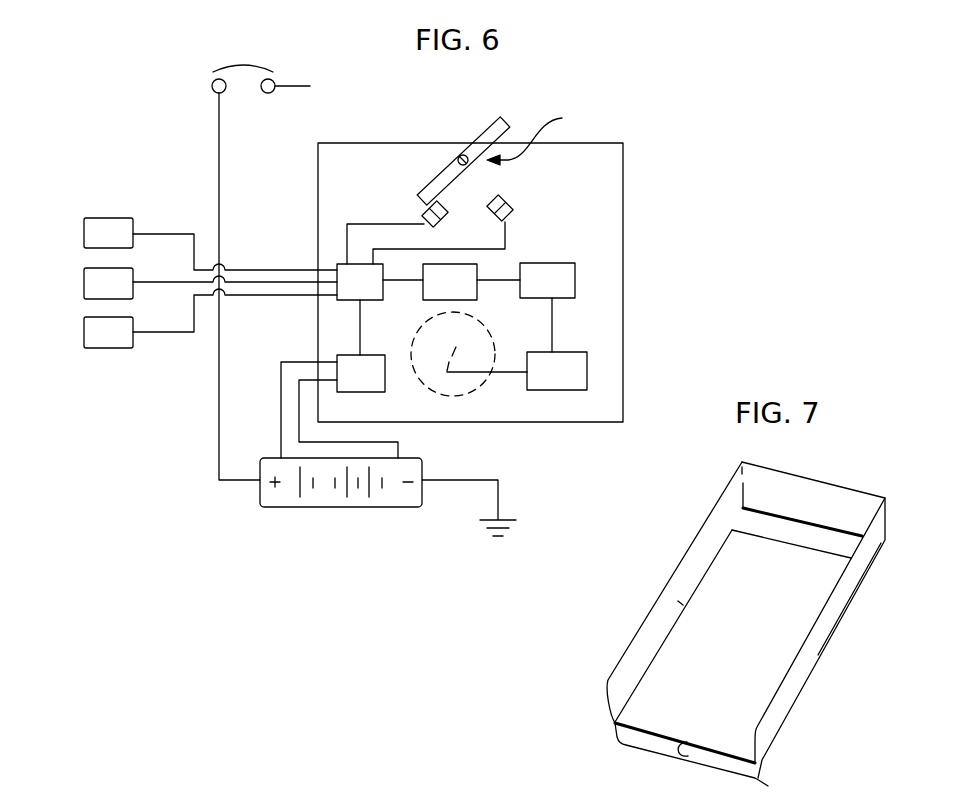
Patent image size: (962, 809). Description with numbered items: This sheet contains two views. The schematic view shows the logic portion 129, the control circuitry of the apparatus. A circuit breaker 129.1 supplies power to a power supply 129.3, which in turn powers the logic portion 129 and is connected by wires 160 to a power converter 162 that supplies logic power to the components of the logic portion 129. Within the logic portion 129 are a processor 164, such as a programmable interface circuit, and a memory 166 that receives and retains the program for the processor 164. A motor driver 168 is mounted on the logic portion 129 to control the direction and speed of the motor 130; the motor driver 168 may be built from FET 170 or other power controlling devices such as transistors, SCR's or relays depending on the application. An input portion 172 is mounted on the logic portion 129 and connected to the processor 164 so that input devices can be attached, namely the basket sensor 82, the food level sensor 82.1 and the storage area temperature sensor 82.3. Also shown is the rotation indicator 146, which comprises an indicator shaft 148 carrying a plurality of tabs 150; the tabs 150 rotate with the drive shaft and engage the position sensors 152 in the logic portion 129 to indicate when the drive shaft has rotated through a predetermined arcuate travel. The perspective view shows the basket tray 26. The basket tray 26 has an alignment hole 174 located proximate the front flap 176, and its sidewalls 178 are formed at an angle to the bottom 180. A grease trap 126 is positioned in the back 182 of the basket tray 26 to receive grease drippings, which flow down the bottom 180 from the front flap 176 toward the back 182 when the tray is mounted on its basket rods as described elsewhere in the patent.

In FIG. 7, the basket tray 26 is at (848, 610).
In FIG. 6, the basket sensor 82 is at (98, 218).
In FIG. 6, the food level sensor 82.1 is at (84, 280).
In FIG. 6, the storage area temperature sensor 82.3 is at (115, 349).
In FIG. 7, the grease trap 126 is at (823, 537).
In FIG. 6, the logic portion 129 is at (560, 423).
In FIG. 6, the circuit breaker 129.1 is at (241, 62).
In FIG. 6, the power supply 129.3 is at (316, 503).
In FIG. 6, the motor 130 is at (456, 398).
In FIG. 6, the rotation indicator 146 is at (545, 137).
In FIG. 6, the indicator shaft 148 is at (456, 150).
In FIG. 6, the tabs 150 is at (427, 195).
In FIG. 6, the position sensors 152 is at (427, 215).
In FIG. 6, the wires 160 is at (283, 427).
In FIG. 6, the power converter 162 is at (349, 358).
In FIG. 6, the processor 164 is at (480, 272).
In FIG. 6, the memory 166 is at (576, 280).
In FIG. 6, the motor driver 168 is at (572, 363).
In FIG. 6, the FET 170 is at (568, 387).
In FIG. 6, the input portion 172 is at (349, 273).
In FIG. 7, the alignment hole 174 is at (680, 753).
In FIG. 7, the front flap 176 is at (760, 779).
In FIG. 7, the sidewalls 178 is at (668, 597).
In FIG. 7, the bottom 180 is at (780, 621).
In FIG. 7, the back 182 is at (793, 489).